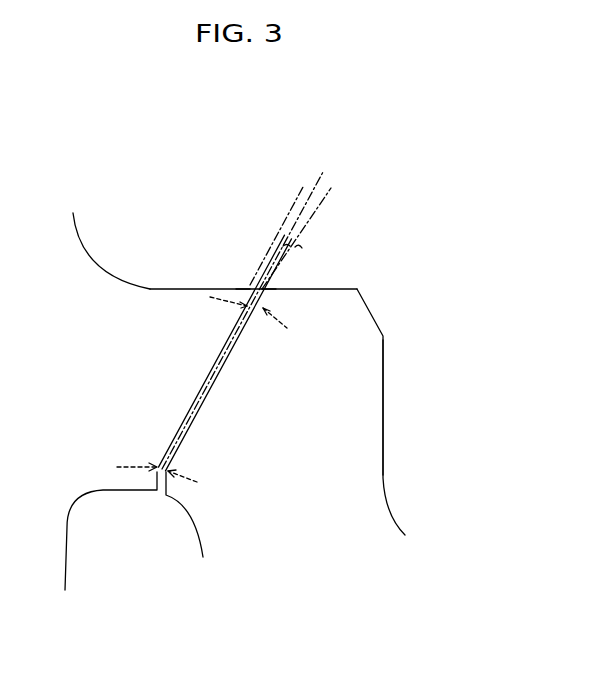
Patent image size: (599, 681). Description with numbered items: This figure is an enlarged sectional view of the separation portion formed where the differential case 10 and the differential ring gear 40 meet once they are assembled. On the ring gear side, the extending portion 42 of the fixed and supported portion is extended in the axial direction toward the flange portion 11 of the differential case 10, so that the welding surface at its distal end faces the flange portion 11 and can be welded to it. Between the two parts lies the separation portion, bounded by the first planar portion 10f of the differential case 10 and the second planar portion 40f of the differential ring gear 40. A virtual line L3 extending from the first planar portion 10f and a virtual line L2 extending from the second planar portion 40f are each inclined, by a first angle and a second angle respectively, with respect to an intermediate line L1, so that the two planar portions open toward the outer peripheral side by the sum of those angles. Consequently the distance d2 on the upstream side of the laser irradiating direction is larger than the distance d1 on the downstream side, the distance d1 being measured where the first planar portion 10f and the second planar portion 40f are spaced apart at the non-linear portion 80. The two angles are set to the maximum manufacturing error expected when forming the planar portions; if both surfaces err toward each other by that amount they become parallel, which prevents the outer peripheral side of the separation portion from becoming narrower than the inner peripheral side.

The differential case 10 is at (418, 412).
The flange portion 11 is at (376, 401).
The differential ring gear 40 is at (215, 235).
The extending portion 42 is at (192, 295).
The non-linear portion 80 is at (179, 462).
The intermediate line L1 is at (254, 306).
The virtual line L2 is at (279, 226).
The virtual line L3 is at (310, 232).
The distance d1 is at (156, 463).
The distance d2 is at (268, 300).
The second planar portion 40f is at (238, 330).
The first planar portion 10f is at (243, 330).